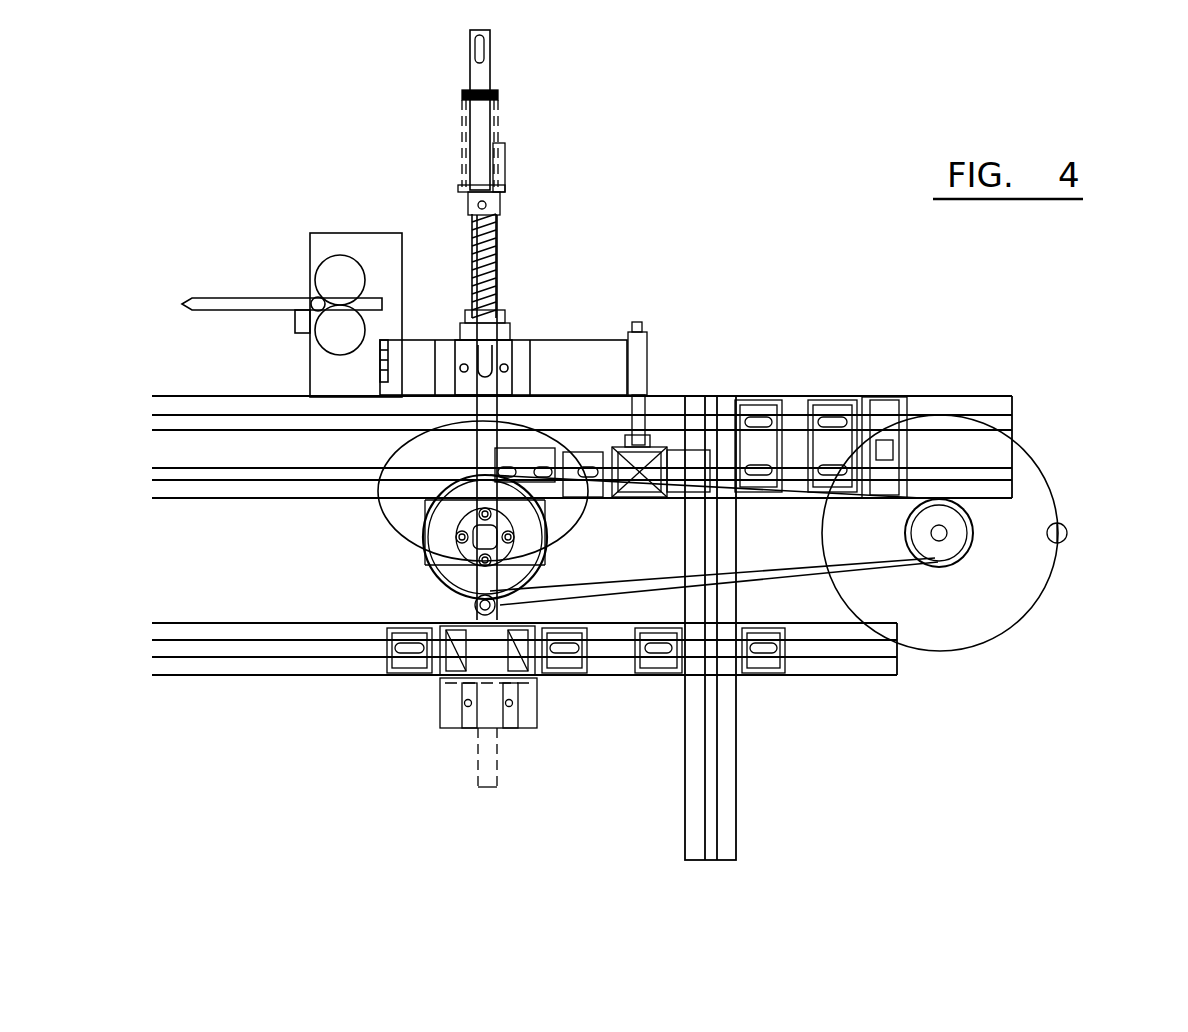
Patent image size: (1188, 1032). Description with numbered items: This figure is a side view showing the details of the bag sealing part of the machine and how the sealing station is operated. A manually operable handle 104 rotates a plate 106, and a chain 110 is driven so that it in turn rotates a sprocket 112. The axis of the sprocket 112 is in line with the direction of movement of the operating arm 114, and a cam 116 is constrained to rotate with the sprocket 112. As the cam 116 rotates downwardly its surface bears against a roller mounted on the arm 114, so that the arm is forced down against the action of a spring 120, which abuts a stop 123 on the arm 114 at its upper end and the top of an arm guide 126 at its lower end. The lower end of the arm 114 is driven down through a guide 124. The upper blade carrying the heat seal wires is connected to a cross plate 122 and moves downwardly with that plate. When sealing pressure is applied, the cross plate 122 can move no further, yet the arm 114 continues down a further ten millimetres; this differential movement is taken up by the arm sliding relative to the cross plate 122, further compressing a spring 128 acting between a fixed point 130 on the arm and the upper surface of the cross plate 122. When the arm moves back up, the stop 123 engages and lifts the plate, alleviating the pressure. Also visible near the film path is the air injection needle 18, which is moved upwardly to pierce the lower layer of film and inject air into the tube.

The fixed point 130 is at (487, 82).
The spring 128 is at (496, 127).
The cross plate 122 is at (503, 163).
The stop 123 is at (500, 203).
The spring 120 is at (497, 243).
The operating arm 114 is at (498, 270).
The arm guide 126 is at (505, 330).
The cam 116 is at (380, 524).
The sprocket 112 is at (425, 578).
The air injection needle 18 is at (475, 607).
The guide 124 is at (468, 730).
The chain 110 is at (890, 567).
The plate 106 is at (1030, 505).
The manually operable handle 104 is at (1067, 533).